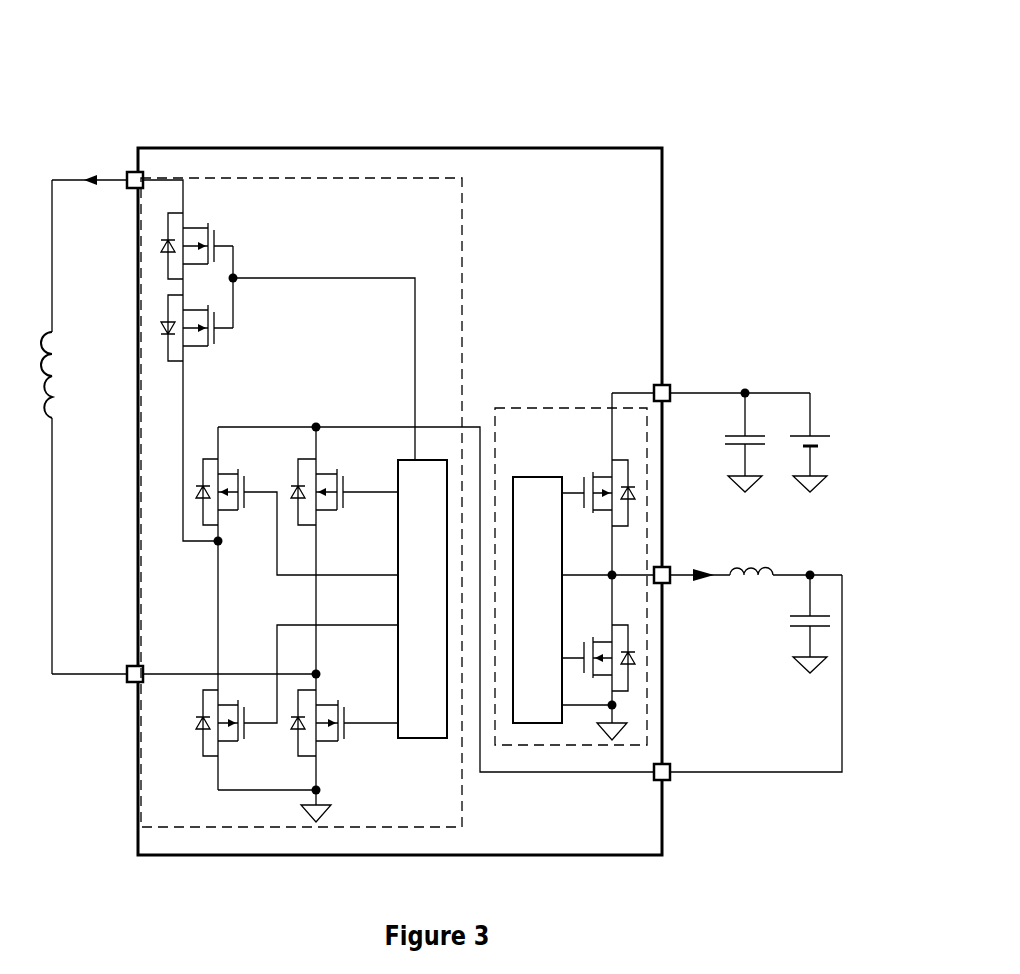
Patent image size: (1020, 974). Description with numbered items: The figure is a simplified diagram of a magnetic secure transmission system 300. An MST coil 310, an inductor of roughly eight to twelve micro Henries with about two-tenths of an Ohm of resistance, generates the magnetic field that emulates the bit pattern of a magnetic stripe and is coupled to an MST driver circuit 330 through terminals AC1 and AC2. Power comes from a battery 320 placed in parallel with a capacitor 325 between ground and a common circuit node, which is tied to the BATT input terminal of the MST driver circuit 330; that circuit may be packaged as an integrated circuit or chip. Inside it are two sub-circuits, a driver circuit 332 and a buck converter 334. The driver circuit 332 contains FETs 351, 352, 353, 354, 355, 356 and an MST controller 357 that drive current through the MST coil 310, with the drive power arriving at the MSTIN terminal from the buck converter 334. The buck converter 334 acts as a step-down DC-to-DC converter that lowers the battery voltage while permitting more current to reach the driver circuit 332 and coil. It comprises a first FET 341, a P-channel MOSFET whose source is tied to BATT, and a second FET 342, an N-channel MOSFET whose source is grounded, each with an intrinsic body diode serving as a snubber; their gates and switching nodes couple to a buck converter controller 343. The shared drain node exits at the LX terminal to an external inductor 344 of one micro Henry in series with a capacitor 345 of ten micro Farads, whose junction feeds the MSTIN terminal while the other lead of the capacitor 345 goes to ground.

The MST system 300 is at (129, 72).
The MST coil 310 is at (58, 325).
The battery 320 is at (824, 418).
The capacitor 325 is at (750, 415).
The MST driver circuit 330 is at (667, 138).
The driver circuit 332 is at (463, 210).
The buck converter 334 is at (519, 408).
The first FET 341 is at (574, 458).
The second FET 342 is at (595, 690).
The buck converter controller 343 is at (536, 476).
The inductor 344 is at (785, 570).
The capacitor 345 is at (828, 612).
The FET 351 is at (222, 228).
The FET 352 is at (223, 337).
The FET 353 is at (224, 464).
The FET 354 is at (331, 464).
The FET 355 is at (225, 745).
The FET 356 is at (325, 695).
The MST controller 357 is at (422, 740).